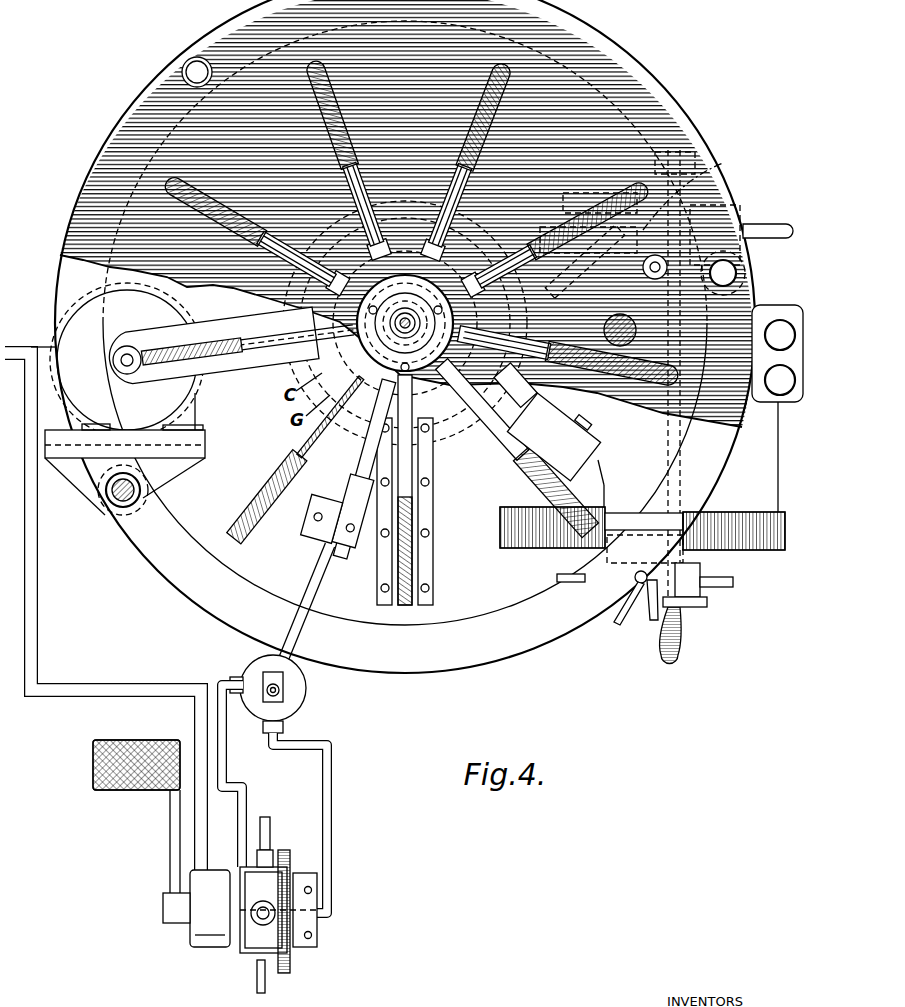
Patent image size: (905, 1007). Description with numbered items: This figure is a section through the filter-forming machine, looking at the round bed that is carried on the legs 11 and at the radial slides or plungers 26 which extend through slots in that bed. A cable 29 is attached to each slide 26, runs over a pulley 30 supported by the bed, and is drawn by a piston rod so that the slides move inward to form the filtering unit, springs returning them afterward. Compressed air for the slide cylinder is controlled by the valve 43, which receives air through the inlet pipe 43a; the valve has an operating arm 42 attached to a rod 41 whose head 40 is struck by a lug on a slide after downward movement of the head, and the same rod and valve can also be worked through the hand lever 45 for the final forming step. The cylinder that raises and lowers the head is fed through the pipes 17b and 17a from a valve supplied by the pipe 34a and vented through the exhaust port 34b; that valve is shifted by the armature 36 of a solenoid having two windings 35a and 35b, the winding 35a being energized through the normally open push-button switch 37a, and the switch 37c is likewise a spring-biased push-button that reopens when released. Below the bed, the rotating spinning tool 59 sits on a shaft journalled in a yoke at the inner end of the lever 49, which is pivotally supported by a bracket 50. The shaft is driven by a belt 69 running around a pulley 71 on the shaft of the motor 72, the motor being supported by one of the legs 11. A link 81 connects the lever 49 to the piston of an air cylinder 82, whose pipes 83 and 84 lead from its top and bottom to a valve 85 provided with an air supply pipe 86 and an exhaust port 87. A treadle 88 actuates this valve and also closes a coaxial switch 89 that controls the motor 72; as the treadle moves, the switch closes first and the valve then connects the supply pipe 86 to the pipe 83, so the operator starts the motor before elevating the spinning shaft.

The legs 11 is at (737, 273).
The pipe 17a is at (622, 625).
The pipe 17b is at (652, 622).
The slides or plungers 26 is at (645, 190).
The cable 29 is at (250, 352).
The pulley 30 is at (365, 400).
The pipe 34a is at (720, 587).
The exhaust port 34b is at (580, 585).
The winding 35a is at (755, 520).
The winding 35b is at (515, 548).
The armature 36 is at (636, 522).
The manually-operated switch 37a is at (765, 380).
The switch 37c is at (778, 320).
The head 40 is at (657, 280).
The rod 41 is at (668, 276).
The operating arm 42 is at (648, 277).
The valve 43 is at (723, 170).
The inlet pipe 43a is at (760, 225).
The hand lever 45 is at (640, 332).
The lever 49 is at (322, 590).
The bracket 50 is at (318, 535).
The rotating spinning tool 59 is at (432, 400).
The belt 69 is at (240, 385).
The pulley 71 is at (145, 348).
The motor 72 is at (125, 310).
The link 81 is at (283, 689).
The air cylinder 82 is at (300, 708).
The pipe 83 is at (230, 782).
The pipe 84 is at (333, 862).
The valve 85 is at (250, 950).
The air supply pipe 86 is at (268, 994).
The exhaust port 87 is at (272, 832).
The treadle 88 is at (130, 793).
The switch 89 is at (205, 945).